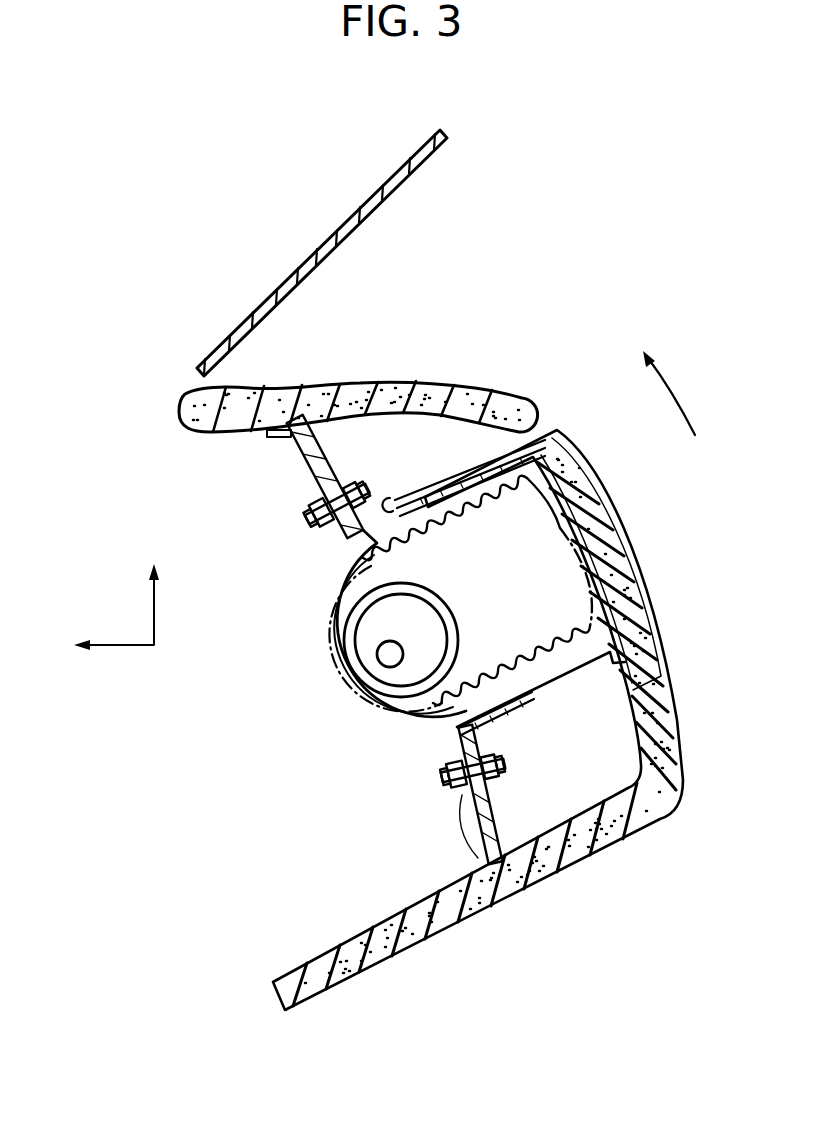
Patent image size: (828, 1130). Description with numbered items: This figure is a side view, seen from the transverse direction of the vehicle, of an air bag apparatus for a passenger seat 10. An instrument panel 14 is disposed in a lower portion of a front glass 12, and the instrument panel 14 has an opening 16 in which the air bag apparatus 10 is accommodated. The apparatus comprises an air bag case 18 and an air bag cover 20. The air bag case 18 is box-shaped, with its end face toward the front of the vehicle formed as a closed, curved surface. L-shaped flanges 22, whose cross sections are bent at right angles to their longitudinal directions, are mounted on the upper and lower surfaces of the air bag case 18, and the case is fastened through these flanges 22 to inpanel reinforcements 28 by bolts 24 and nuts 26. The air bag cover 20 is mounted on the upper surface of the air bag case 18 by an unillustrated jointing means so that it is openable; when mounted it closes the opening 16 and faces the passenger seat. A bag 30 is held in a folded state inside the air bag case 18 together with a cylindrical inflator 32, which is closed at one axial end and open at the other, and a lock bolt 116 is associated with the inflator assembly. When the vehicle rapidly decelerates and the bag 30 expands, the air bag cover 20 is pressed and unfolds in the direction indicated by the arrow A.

The air bag apparatus for a passenger seat 10 is at (175, 530).
The front glass 12 is at (291, 266).
The instrument panel 14 is at (504, 390).
The opening 16 is at (321, 576).
The air bag case 18 is at (585, 664).
The air bag cover 20 is at (640, 566).
The L-shaped flange 22 is at (418, 500).
The bolt 24 is at (304, 514).
The nut 26 is at (312, 500).
The inpanel reinforcement 28 is at (322, 463).
The bag 30 is at (323, 600).
The inflator 32 is at (360, 680).
The lock bolt 116 is at (383, 667).
The arrow A is at (674, 389).